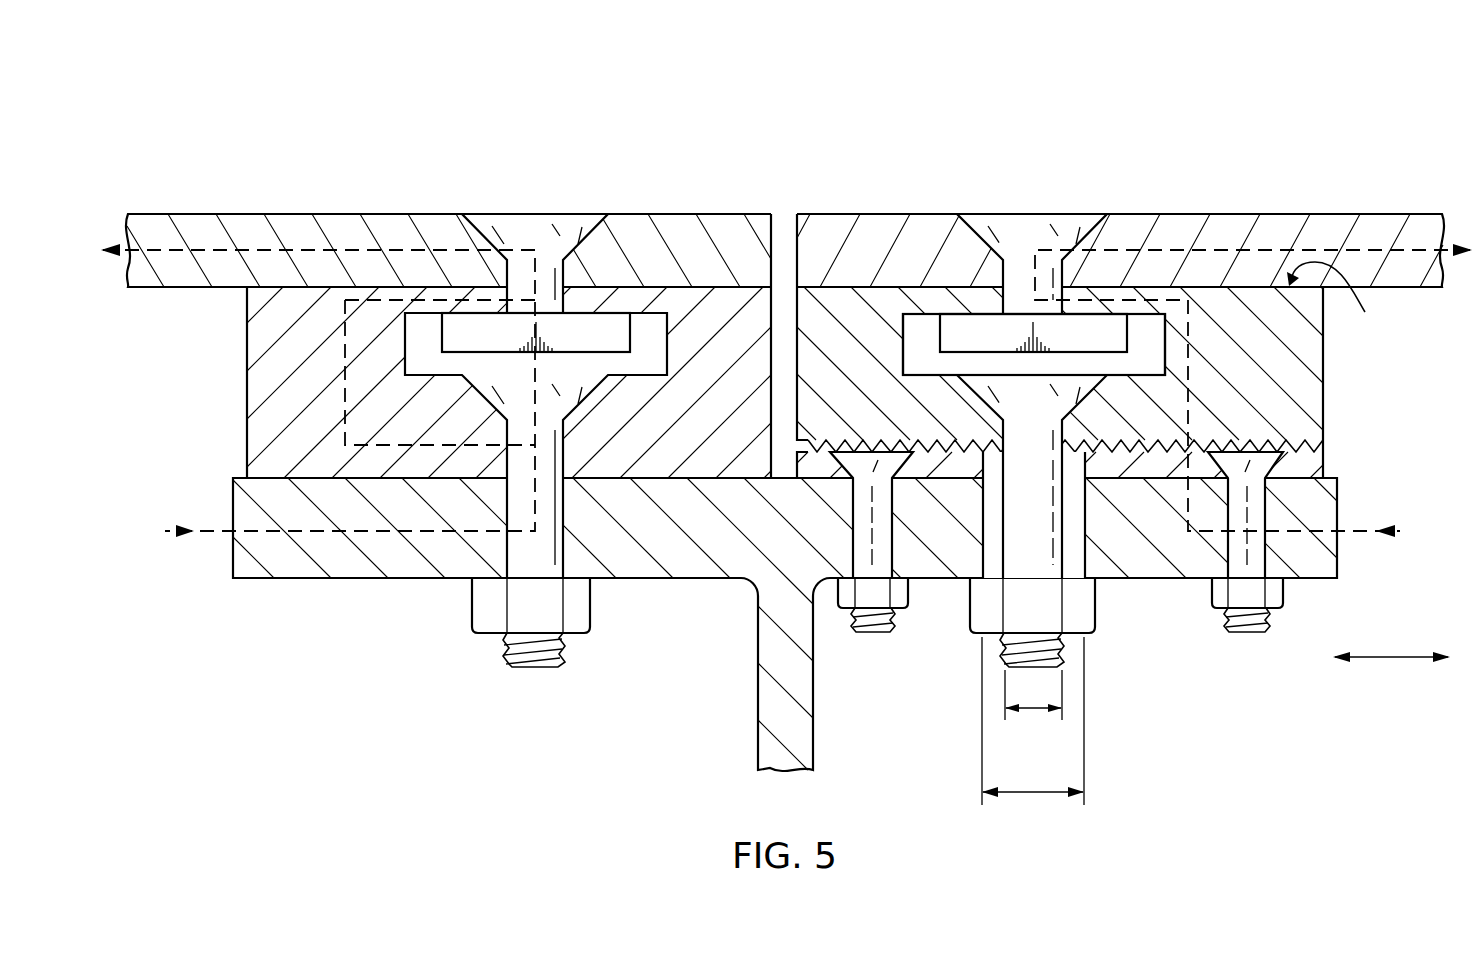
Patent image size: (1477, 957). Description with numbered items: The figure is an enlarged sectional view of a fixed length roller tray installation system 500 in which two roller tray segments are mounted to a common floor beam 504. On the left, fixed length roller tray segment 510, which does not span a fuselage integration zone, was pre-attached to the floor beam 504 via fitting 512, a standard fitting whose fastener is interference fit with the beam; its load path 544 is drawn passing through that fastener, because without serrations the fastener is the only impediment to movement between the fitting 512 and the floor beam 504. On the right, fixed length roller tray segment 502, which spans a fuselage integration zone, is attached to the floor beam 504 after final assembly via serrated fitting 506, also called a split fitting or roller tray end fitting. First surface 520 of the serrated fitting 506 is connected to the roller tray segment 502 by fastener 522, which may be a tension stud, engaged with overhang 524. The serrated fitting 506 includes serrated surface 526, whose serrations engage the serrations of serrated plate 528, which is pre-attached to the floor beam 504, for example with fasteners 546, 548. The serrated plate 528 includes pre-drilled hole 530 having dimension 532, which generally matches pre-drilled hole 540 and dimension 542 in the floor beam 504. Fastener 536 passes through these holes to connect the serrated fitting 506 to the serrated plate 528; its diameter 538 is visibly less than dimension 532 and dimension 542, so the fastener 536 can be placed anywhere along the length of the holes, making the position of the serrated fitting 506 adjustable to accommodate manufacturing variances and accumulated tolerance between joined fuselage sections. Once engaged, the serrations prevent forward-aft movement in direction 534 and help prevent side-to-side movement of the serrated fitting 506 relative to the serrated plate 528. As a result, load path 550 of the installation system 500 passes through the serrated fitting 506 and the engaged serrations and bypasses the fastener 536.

The fixed length roller tray installation system 500 is at (603, 115).
The fixed length roller tray segment 502 is at (1382, 222).
The floor beam 504 is at (765, 706).
The serrated fitting 506 is at (1313, 367).
The fixed length roller tray segment 510 is at (190, 222).
The fitting 512 is at (248, 390).
The first surface 520 is at (1346, 293).
The fastener 522 is at (1036, 412).
The overhang 524 is at (898, 335).
The serrated surface 526 is at (1318, 443).
The serrated plate 528 is at (1315, 465).
The pre-drilled hole 530 is at (1039, 515).
The dimension 532 is at (1035, 742).
The direction 534 is at (1393, 660).
The fastener 536 is at (1053, 557).
The diameter 538 is at (1040, 712).
The pre-drilled hole 540 is at (988, 545).
The dimension 542 is at (1035, 796).
The load path 544 is at (325, 250).
The fastener 546 is at (875, 641).
The fastener 548 is at (1250, 633).
The load path 550 is at (1268, 250).